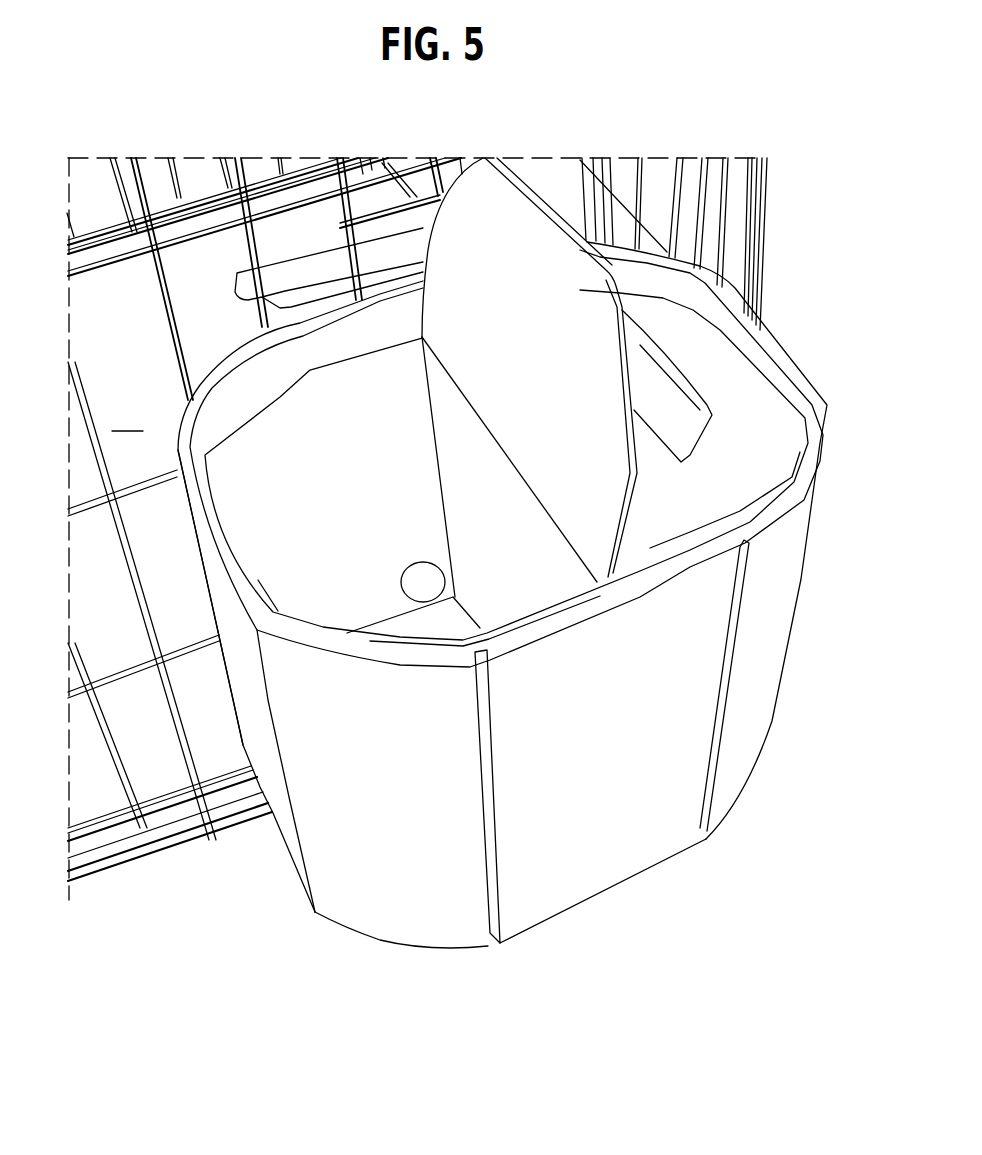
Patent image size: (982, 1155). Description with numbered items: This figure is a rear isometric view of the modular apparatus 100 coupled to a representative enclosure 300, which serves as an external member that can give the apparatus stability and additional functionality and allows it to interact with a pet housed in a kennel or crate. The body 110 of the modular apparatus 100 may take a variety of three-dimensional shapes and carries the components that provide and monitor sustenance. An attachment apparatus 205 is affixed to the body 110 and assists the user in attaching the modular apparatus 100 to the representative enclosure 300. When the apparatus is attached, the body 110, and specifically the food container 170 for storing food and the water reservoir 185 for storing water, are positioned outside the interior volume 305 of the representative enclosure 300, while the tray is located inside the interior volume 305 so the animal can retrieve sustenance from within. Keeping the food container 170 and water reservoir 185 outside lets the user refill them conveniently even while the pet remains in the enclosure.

The modular apparatus 100 is at (517, 612).
The body 110 is at (646, 886).
The food container 170 is at (277, 743).
The water reservoir 185 is at (775, 546).
The attachment apparatus 205 is at (372, 216).
The representative enclosure 300 is at (417, 503).
The interior volume 305 is at (142, 601).